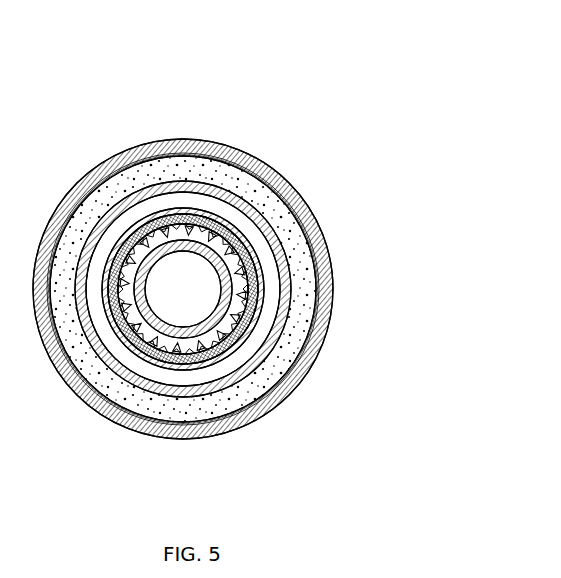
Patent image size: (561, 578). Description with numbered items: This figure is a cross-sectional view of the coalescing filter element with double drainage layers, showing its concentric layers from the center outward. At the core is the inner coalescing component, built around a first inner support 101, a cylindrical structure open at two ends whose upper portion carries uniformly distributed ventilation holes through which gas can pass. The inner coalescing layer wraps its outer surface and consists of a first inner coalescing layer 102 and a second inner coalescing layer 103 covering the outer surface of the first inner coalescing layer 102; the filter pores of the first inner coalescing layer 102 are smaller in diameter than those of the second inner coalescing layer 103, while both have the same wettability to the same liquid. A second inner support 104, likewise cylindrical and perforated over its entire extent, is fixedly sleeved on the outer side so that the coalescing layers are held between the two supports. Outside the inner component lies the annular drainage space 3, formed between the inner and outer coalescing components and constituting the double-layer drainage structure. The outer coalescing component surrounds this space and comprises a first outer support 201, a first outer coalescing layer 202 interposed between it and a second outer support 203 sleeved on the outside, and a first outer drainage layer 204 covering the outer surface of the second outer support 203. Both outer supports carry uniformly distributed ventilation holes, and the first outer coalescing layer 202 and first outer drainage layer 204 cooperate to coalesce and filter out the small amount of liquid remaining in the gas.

The drainage space 3 is at (210, 203).
The first inner support 101 is at (250, 338).
The first inner coalescing layer 102 is at (230, 312).
The second inner coalescing layer 103 is at (263, 283).
The second inner support 104 is at (250, 258).
The first outer support 201 is at (242, 197).
The first outer coalescing layer 202 is at (287, 222).
The second outer support 203 is at (298, 192).
The first outer drainage layer 204 is at (275, 172).